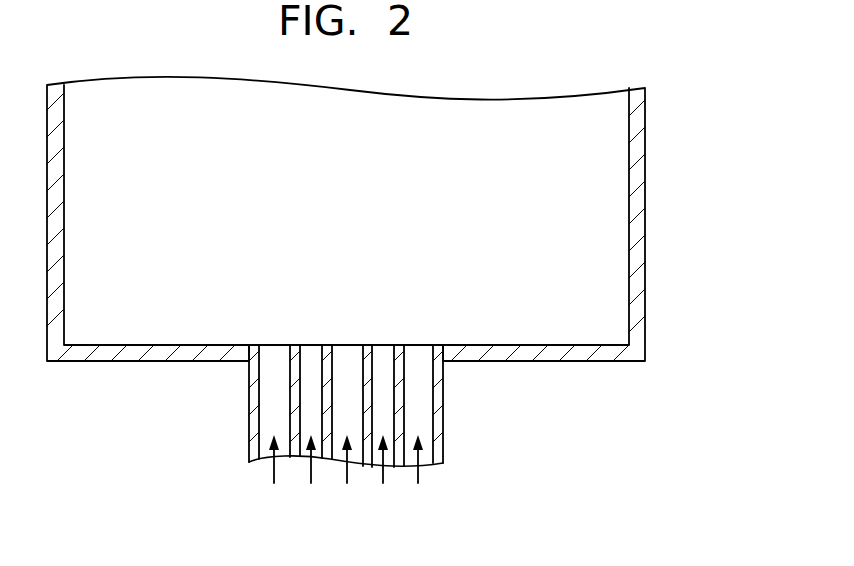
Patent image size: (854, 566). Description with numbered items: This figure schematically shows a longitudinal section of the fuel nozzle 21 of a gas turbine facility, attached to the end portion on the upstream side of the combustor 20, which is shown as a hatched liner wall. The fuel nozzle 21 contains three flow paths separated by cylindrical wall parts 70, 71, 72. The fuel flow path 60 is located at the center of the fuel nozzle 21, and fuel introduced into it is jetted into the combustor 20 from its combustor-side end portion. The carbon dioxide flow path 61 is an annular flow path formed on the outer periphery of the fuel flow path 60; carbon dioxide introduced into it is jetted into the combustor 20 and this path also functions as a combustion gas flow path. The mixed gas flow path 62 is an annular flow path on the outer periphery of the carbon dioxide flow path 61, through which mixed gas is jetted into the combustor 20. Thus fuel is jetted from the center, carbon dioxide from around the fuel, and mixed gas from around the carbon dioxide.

The combustor 20 is at (636, 203).
The fuel nozzle 21 is at (374, 381).
The fuel flow path 60 is at (345, 400).
The carbon dioxide flow path 61 is at (385, 360).
The mixed gas flow path 62 is at (422, 360).
The cylindrical wall part 70 is at (327, 458).
The cylindrical wall part 71 is at (297, 457).
The cylindrical wall part 72 is at (253, 462).